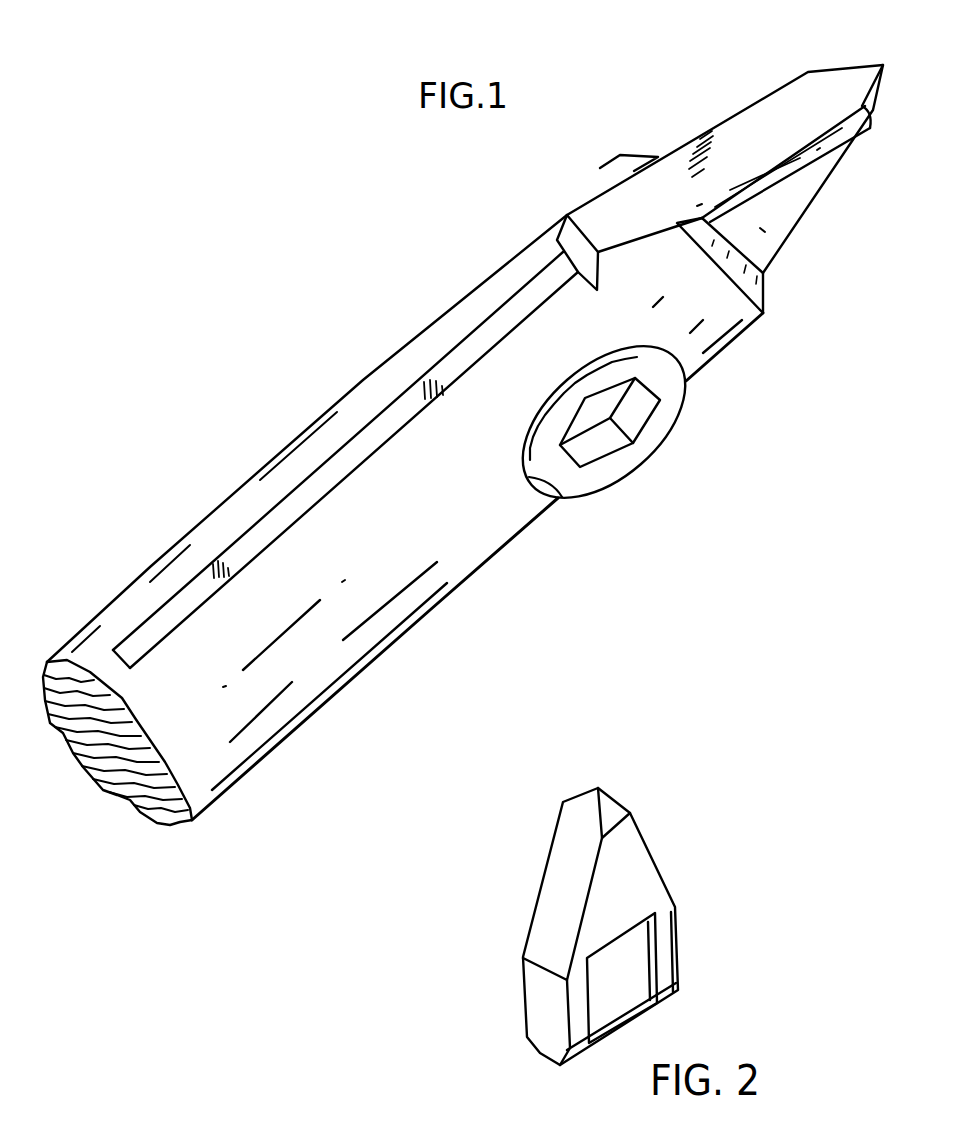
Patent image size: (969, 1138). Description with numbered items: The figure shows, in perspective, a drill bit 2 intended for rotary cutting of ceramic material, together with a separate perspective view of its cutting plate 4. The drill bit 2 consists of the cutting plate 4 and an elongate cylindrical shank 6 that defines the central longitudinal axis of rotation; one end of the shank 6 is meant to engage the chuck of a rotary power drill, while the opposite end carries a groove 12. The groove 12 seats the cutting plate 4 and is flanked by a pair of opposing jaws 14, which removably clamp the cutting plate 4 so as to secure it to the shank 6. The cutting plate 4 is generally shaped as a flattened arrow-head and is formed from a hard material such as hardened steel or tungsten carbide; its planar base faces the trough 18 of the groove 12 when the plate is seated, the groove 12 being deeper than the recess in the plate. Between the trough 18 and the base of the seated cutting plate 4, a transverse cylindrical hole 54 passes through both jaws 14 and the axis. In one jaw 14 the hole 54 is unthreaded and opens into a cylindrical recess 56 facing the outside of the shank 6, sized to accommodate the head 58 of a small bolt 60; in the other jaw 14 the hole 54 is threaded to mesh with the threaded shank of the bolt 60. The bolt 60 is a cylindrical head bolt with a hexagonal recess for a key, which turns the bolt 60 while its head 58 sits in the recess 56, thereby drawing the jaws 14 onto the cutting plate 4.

In FIG. 1, the drill bit 2 is at (568, 160).
In FIG. 1, the cutting plate 4 is at (775, 107).
In FIG. 2, the cutting plate 4 is at (655, 808).
In FIG. 1, the elongate cylindrical shank 6 is at (257, 700).
In FIG. 1, the groove 12 is at (347, 463).
In FIG. 1, the jaws 14 is at (530, 333).
In FIG. 1, the trough 18 is at (130, 665).
In FIG. 1, the transverse cylindrical hole 54 is at (554, 497).
In FIG. 1, the cylindrical recess 56 is at (583, 480).
In FIG. 1, the head 58 is at (672, 402).
In FIG. 1, the bolt 60 is at (668, 443).